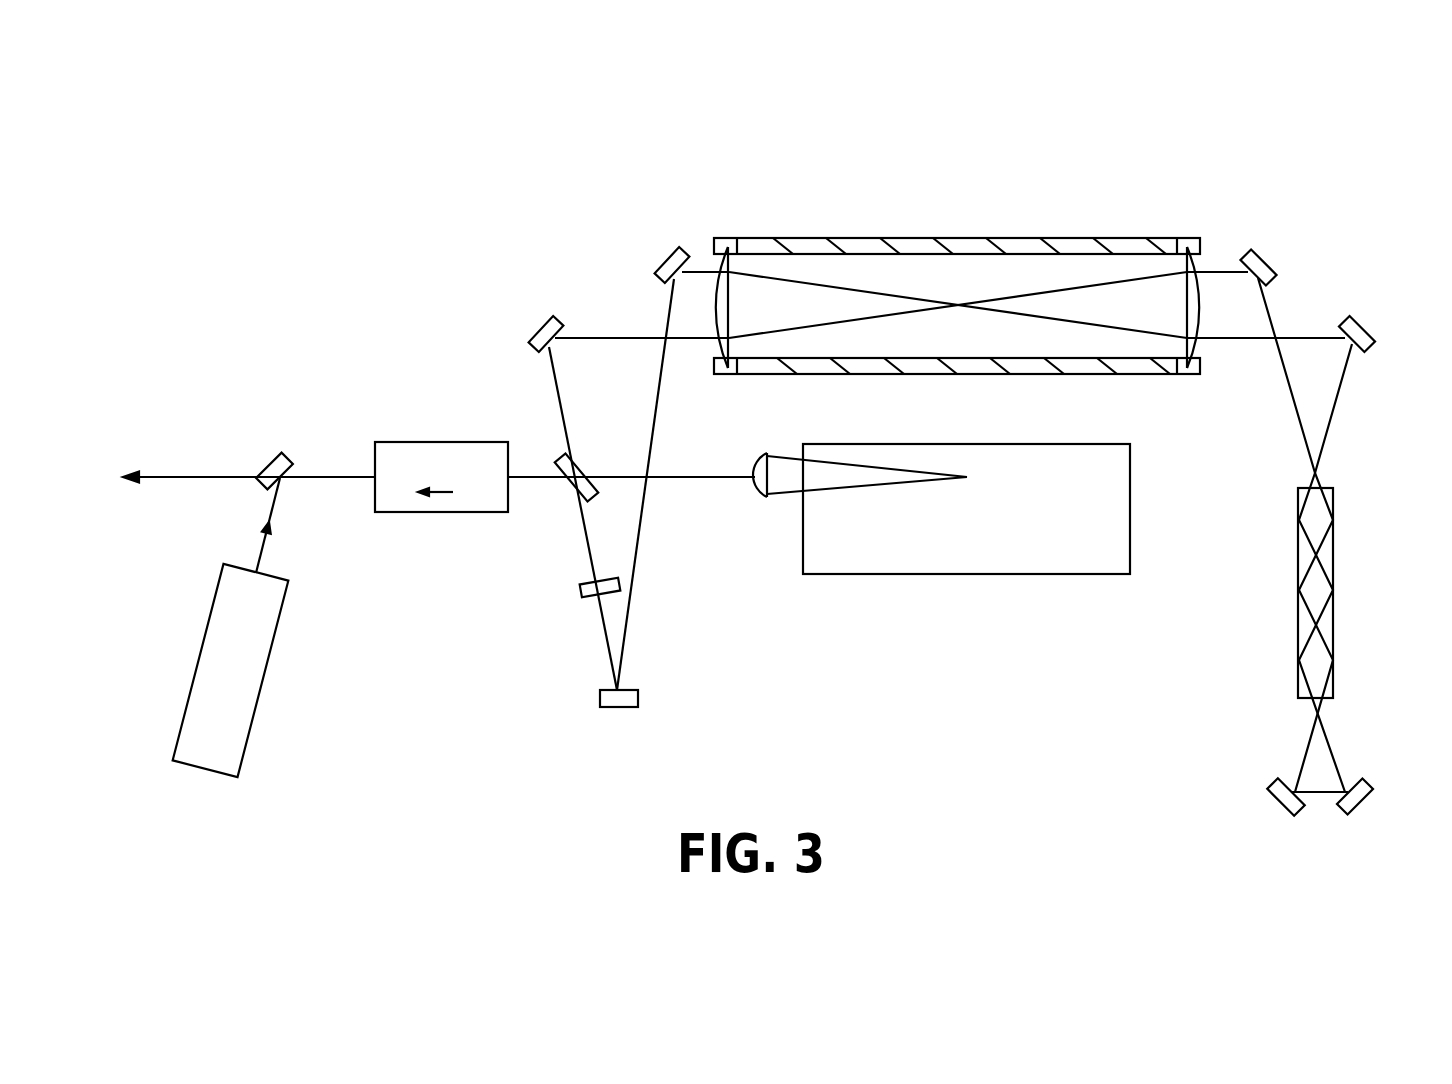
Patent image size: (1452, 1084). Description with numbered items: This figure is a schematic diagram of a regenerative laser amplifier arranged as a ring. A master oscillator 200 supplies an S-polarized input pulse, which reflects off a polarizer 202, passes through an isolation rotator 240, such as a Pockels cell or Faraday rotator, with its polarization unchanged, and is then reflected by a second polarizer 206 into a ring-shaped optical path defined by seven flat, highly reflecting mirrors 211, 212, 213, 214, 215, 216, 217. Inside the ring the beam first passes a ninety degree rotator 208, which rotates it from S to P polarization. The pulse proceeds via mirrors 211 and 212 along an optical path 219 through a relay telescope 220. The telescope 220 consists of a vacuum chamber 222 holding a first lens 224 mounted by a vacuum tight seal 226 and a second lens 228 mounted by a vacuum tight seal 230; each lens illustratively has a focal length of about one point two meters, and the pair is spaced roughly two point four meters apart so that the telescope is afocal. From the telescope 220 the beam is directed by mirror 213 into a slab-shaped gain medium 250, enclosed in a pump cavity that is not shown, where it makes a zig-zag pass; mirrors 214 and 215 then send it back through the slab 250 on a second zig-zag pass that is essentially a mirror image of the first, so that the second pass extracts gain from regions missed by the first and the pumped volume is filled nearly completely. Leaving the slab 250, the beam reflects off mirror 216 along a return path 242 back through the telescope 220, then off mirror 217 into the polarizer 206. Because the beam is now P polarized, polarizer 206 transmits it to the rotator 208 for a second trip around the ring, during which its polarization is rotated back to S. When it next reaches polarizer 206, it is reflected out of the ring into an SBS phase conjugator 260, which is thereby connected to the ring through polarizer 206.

The master oscillator 200 is at (268, 627).
The polarizer 202 is at (273, 437).
The rotator 240 is at (441, 447).
The polarizer 206 is at (555, 502).
The 90 degree rotator 208 is at (564, 601).
The mirror 211 is at (589, 711).
The mirror 212 is at (668, 453).
The mirror 213 is at (1365, 534).
The mirror 214 is at (1391, 810).
The mirror 215 is at (1276, 819).
The mirror 216 is at (1293, 509).
The mirror 217 is at (607, 489).
The optical path 219 is at (958, 256).
The relay telescope 220 is at (978, 249).
The vacuum chamber 222 is at (957, 279).
The first lens 224 is at (670, 307).
The vacuum tight seal 226 is at (757, 276).
The second lens 228 is at (1157, 307).
The vacuum tight seal 230 is at (1213, 276).
The path 242 is at (968, 165).
The slab-shaped gain medium 250 is at (1364, 593).
The SBS phase conjugator 260 is at (941, 539).